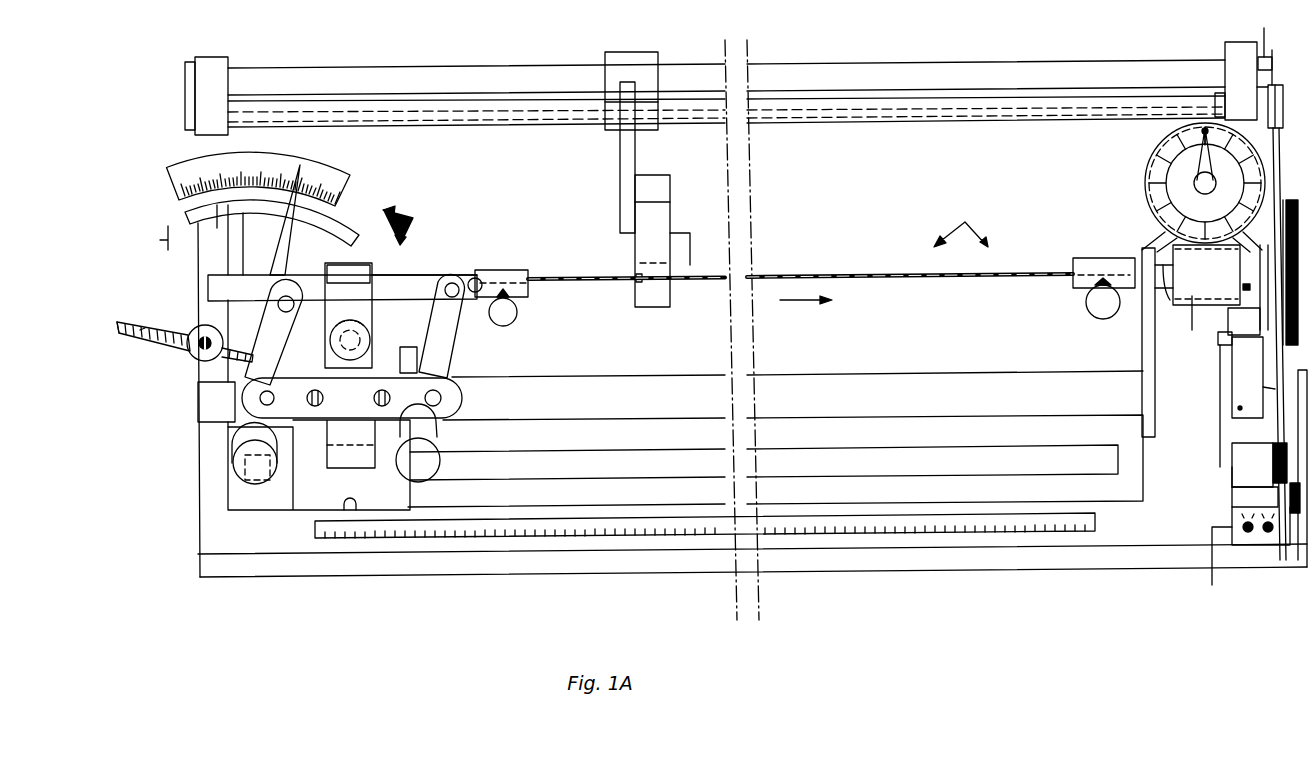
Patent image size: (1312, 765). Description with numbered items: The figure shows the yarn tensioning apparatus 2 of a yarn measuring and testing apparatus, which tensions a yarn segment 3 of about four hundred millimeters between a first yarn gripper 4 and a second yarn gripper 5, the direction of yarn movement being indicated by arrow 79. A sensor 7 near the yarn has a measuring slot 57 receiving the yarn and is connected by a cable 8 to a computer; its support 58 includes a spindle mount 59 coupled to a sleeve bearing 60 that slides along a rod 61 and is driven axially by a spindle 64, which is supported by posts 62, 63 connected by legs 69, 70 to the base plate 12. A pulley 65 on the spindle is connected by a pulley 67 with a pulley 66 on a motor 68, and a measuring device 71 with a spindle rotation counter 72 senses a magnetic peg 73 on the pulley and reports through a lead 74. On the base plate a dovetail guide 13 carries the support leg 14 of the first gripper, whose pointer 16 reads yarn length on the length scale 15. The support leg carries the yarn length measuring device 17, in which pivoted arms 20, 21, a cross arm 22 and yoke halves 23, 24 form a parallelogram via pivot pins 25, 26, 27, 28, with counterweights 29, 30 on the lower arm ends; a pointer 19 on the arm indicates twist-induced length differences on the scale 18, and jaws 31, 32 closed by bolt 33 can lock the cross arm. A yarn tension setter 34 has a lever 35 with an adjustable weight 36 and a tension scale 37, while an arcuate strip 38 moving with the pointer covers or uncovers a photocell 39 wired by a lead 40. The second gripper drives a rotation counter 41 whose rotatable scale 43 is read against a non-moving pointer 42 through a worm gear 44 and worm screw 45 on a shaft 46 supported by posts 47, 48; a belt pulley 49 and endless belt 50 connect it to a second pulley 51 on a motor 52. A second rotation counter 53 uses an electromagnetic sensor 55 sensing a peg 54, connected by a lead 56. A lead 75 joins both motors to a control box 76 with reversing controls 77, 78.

The yarn tensioning apparatus 2 is at (961, 225).
The yarn segment 3 is at (812, 279).
The first yarn gripper 4 is at (530, 270).
The second yarn gripper 5 is at (1073, 285).
The sensor 7 is at (670, 298).
The cable 8 is at (690, 248).
The base plate 12 is at (578, 572).
The guide 13 is at (880, 448).
The support leg 14 is at (305, 490).
The length scale 15 is at (480, 538).
The pointer 16 is at (350, 512).
The yarn length measuring device 17 is at (410, 214).
The scale 18 is at (170, 168).
The pointer 19 is at (306, 172).
The pivoted arm 20 is at (455, 350).
The pivoted arm 21 is at (200, 377).
The cross arm 22 is at (449, 276).
The yoke half 23 is at (410, 350).
The yoke half 24 is at (441, 396).
The pivot pin 25 is at (480, 278).
The pivot pin 26 is at (272, 292).
The pivot pin 27 is at (440, 420).
The pivot pin 28 is at (235, 418).
The counterweight 29 is at (438, 462).
The counterweight 30 is at (238, 466).
The jaw 31 is at (362, 290).
The jaw 32 is at (405, 287).
The bolt 33 is at (343, 337).
The yarn tension setter 34 is at (185, 331).
The lever 35 is at (165, 338).
The weight 36 is at (203, 325).
The scale 37 is at (122, 325).
The arcuate strip 38 is at (357, 216).
The photocell 39 is at (213, 227).
The lead 40 is at (150, 238).
The rotation counter 41 is at (1172, 165).
The non-moving pointer 42 is at (1196, 190).
The rotatable scale 43 is at (1175, 140).
The worm gear 44 is at (1147, 185).
The worm screw 45 is at (1190, 322).
The shaft 46 is at (1168, 305).
The post 47 is at (1145, 300).
The post 48 is at (1262, 258).
The belt pulley 49 is at (1292, 200).
The endless belt 50 is at (1272, 357).
The second pulley 51 is at (1300, 520).
The motor 52 is at (1240, 500).
The second rotation counter 53 is at (1231, 321).
The peg 54 is at (1244, 287).
The electromagnetic sensor 55 is at (1238, 330).
The lead 56 is at (1220, 432).
The measuring slot 57 is at (636, 278).
The support 58 is at (630, 85).
The spindle mount 59 is at (652, 122).
The sleeve bearing 60 is at (620, 58).
The rod 61 is at (525, 70).
The post 62 is at (205, 107).
The post 63 is at (1232, 50).
The spindle 64 is at (852, 122).
The pulley 65 is at (1280, 94).
The pulley 66 is at (1272, 456).
The pulley 67 is at (1257, 387).
The motor 68 is at (1237, 475).
The leg 69 is at (212, 402).
The leg 70 is at (1240, 408).
The measuring device 71 is at (1274, 60).
The spindle rotation counter 72 is at (1262, 55).
The magnetic peg 73 is at (1249, 88).
The lead 74 is at (1266, 44).
The lead 75 is at (1212, 572).
The control box 76 is at (1250, 535).
The control 77 is at (1232, 524).
The control 78 is at (1270, 535).
The direction arrow 79 is at (786, 305).